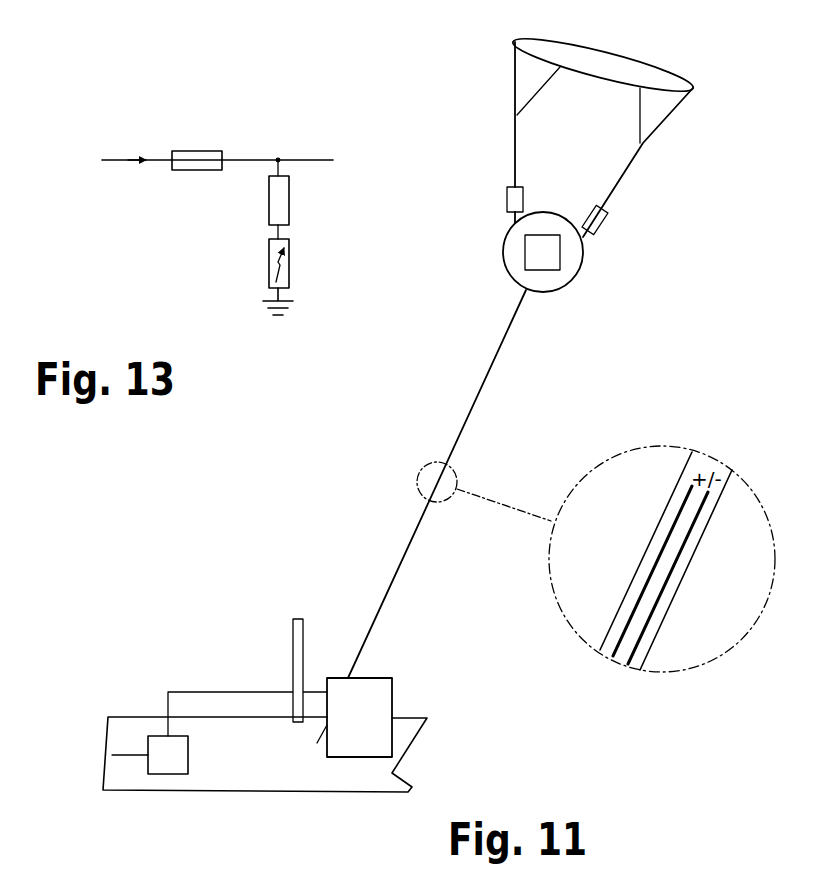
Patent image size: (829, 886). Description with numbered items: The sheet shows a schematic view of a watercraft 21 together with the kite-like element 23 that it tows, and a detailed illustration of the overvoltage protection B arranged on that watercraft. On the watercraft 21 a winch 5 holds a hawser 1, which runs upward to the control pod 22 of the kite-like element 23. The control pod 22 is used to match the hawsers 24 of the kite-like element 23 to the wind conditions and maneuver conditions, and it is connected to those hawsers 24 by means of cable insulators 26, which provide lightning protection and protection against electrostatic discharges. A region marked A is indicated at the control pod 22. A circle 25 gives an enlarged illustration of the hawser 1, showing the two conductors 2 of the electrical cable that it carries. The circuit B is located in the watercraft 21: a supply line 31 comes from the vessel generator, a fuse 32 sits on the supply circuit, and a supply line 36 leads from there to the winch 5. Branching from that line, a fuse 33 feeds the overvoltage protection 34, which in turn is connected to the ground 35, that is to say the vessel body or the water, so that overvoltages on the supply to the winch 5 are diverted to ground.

In FIG. 11, the hawser 1 is at (477, 398).
In FIG. 11, the conductors for an electrical cable 2 is at (668, 575).
In FIG. 11, the winch 5 is at (383, 697).
In FIG. 11, the watercraft 21 is at (348, 783).
In FIG. 11, the control pod 22 is at (545, 285).
In FIG. 11, the kite-like element 23 is at (650, 72).
In FIG. 11, the hawsers 24 is at (640, 115).
In FIG. 11, the circle 25 is at (666, 668).
In FIG. 11, the cable insulators 26 is at (507, 202).
In FIG. 11, the supply line from the vessel generator 31 is at (130, 758).
In FIG. 13, the supply line from the vessel generator 31 is at (118, 162).
In FIG. 13, the fuse on the supply circuit 32 is at (198, 172).
In FIG. 13, the fuse for the overvoltage protection 33 is at (290, 197).
In FIG. 13, the overvoltage protection 34 is at (290, 260).
In FIG. 13, the ground 35 is at (293, 302).
In FIG. 11, the supply line to the winch 36 is at (203, 692).
In FIG. 13, the supply line to the winch 36 is at (310, 160).
In FIG. 11, the control pod detail A is at (554, 258).
In FIG. 11, the overvoltage protection circuit B is at (168, 755).
In FIG. 13, the overvoltage protection circuit B is at (165, 282).